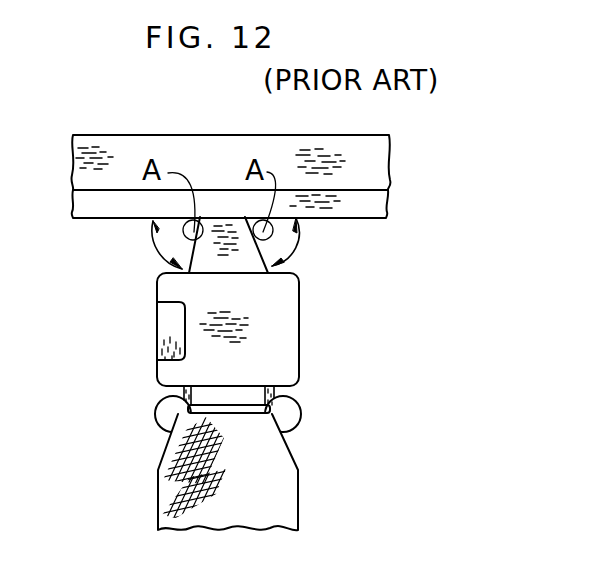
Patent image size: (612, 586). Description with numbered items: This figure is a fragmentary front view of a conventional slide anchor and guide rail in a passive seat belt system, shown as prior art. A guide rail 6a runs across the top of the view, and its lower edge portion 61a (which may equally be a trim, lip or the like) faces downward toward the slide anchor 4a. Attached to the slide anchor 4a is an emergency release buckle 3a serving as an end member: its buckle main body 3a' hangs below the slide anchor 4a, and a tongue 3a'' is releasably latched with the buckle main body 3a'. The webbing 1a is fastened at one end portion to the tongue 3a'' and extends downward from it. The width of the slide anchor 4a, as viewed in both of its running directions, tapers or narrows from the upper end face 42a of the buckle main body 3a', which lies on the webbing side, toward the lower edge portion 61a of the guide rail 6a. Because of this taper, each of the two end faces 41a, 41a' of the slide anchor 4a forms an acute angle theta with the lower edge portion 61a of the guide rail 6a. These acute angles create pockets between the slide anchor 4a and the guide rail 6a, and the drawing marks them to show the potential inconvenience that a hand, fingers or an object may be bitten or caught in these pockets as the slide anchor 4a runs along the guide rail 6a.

The guide rail 6a is at (365, 158).
The lower edge portion of the guide rail 61a is at (363, 218).
The slide anchor 4a is at (245, 259).
The end face of the slide anchor 41a is at (128, 263).
The end face of the slide anchor 41a' is at (338, 248).
The emergency release buckle 3a is at (269, 332).
The buckle main body 3a' is at (294, 329).
The upper end face of the buckle main body 42a is at (228, 273).
The tongue 3a'' is at (271, 411).
The webbing 1a is at (280, 480).